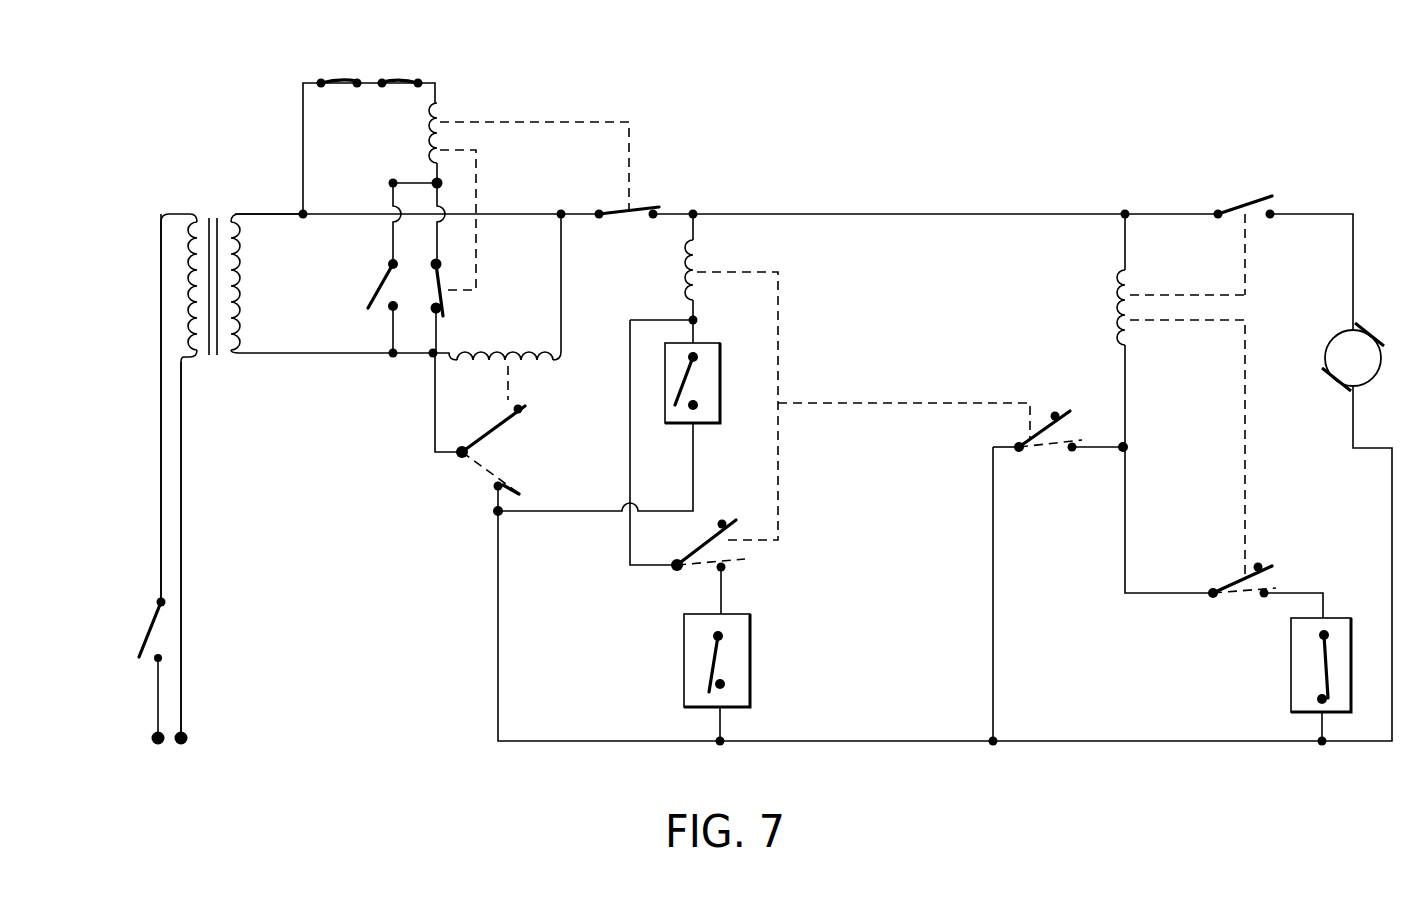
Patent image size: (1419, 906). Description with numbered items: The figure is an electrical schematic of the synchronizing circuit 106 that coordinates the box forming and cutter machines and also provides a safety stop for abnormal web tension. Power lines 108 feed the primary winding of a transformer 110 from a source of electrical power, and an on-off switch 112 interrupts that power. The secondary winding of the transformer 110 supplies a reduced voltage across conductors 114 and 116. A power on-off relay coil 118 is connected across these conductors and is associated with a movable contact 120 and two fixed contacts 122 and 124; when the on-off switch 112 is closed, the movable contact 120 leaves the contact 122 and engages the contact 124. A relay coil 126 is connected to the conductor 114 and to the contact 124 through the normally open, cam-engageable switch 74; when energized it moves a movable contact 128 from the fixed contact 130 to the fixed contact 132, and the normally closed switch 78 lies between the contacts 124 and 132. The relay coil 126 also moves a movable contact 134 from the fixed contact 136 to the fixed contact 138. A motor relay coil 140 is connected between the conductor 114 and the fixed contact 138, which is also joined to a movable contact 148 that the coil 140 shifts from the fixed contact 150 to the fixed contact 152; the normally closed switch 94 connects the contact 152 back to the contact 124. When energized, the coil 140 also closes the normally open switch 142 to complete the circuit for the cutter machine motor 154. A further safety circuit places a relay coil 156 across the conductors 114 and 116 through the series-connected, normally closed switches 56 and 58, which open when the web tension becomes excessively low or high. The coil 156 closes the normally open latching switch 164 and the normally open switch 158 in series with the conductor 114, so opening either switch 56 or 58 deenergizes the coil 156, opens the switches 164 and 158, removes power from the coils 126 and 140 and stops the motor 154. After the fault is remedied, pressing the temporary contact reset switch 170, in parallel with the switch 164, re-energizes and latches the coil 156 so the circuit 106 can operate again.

The normally closed switch 56 is at (341, 80).
The normally closed switch 58 is at (403, 81).
The normally open switch 74 is at (712, 382).
The normally closed switch 78 is at (743, 662).
The normally closed switch 94 is at (1303, 683).
The synchronizing circuit 106 is at (1010, 132).
The power lines 108 is at (160, 432).
The transformer 110 is at (205, 210).
The on-off switch 112 is at (148, 631).
The conductor 114 is at (266, 212).
The conductor 116 is at (320, 356).
The power on-off relay coil 118 is at (505, 352).
The movable contact 120 is at (495, 430).
The fixed contact 122 is at (525, 408).
The fixed contact 124 is at (496, 487).
The relay coil 126 is at (703, 250).
The movable contact 128 is at (700, 550).
The fixed contact 130 is at (725, 515).
The fixed contact 132 is at (728, 570).
The movable contact 134 is at (1040, 432).
The fixed contact 136 is at (1062, 410).
The fixed contact 138 is at (1072, 455).
The motor relay coil 140 is at (1118, 305).
The normally open switch 142 is at (1258, 186).
The movable contact 148 is at (1235, 582).
The fixed contact 150 is at (1263, 566).
The fixed contact 152 is at (1262, 600).
The motor 154 is at (1380, 368).
The relay coil 156 is at (443, 106).
The normally open switch 158 is at (640, 208).
The normally open switch 164 is at (443, 305).
The temporary contact reset switch 170 is at (380, 287).